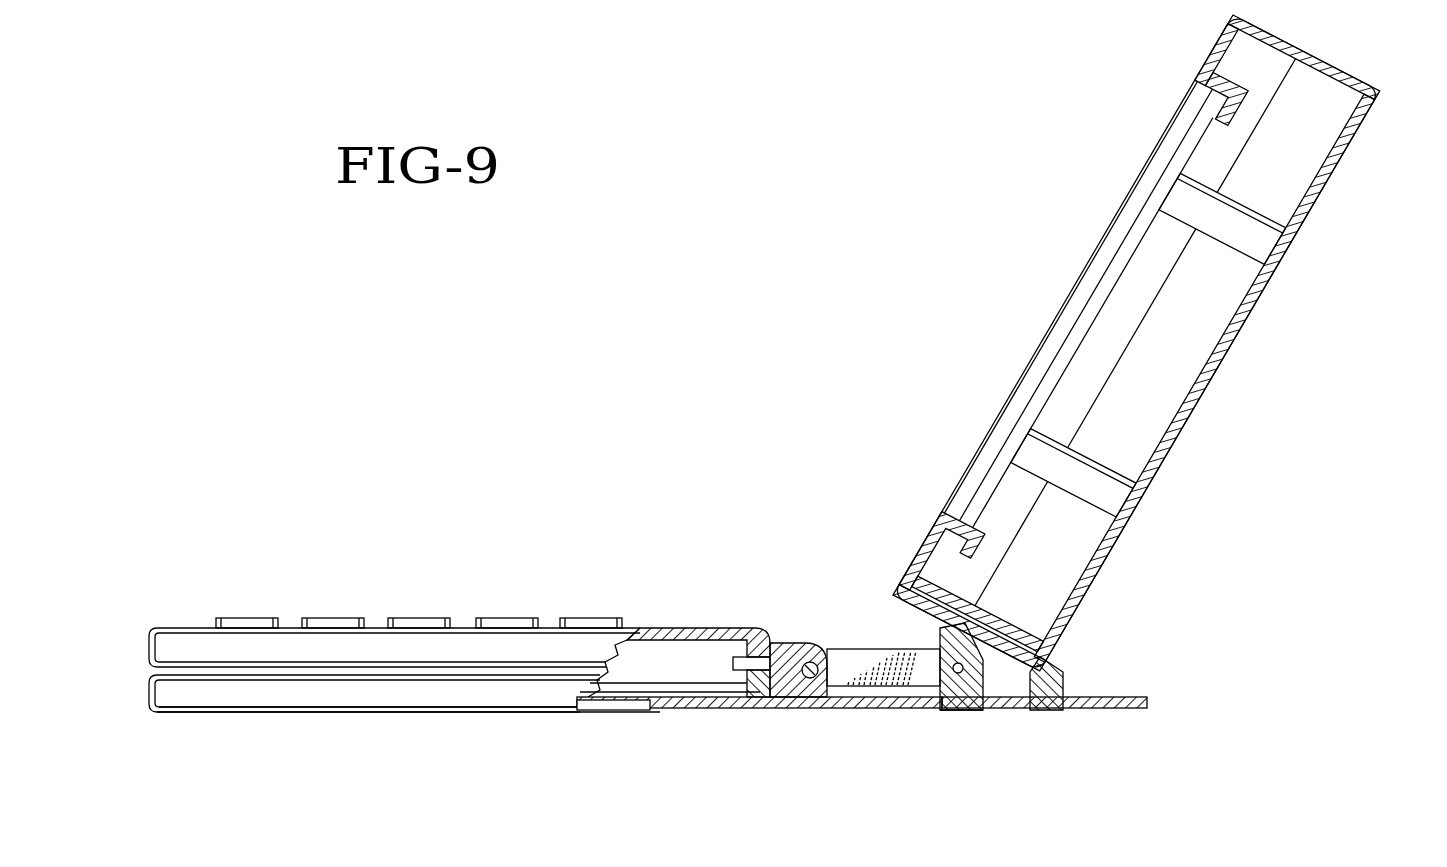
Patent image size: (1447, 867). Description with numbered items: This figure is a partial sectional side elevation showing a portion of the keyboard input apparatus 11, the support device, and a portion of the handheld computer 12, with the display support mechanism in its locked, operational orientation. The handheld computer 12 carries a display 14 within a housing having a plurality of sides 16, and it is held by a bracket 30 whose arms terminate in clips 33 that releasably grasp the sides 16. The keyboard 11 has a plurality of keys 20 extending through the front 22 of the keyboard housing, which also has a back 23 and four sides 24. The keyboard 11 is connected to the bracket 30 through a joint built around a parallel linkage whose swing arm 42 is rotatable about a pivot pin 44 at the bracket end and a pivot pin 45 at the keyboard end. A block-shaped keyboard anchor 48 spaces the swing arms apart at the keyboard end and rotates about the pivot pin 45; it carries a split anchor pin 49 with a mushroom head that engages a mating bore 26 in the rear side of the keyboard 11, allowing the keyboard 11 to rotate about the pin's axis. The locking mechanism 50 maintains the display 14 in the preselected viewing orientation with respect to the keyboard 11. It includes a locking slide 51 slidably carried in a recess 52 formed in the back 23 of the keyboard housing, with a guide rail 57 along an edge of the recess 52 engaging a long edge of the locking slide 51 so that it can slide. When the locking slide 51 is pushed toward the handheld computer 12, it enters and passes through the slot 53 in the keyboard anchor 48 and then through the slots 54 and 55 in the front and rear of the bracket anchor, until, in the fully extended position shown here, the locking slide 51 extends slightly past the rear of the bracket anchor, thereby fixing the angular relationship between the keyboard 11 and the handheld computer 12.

The keyboard input apparatus 11 is at (457, 649).
The handheld computer 12 is at (1088, 253).
The display 14 is at (1172, 163).
The sides 16 is at (1350, 72).
The keys 20 is at (334, 616).
The front 22 is at (655, 627).
The back 23 is at (422, 715).
The sides 24 is at (238, 693).
The bore 26 is at (762, 690).
The bracket 30 is at (1110, 335).
The clip 33 is at (937, 526).
The swing arm 42 is at (866, 648).
The pivot pin 44 is at (957, 700).
The pivot pin 45 is at (806, 661).
The keyboard anchor 48 is at (805, 621).
The split anchor pin 49 is at (738, 666).
The locking mechanism 50 is at (891, 682).
The locking slide 51 is at (605, 706).
The recess 52 is at (1130, 692).
The slot 53 is at (828, 710).
The slot 54 is at (965, 709).
The slot 55 is at (1046, 709).
The guide rail 57 is at (637, 714).